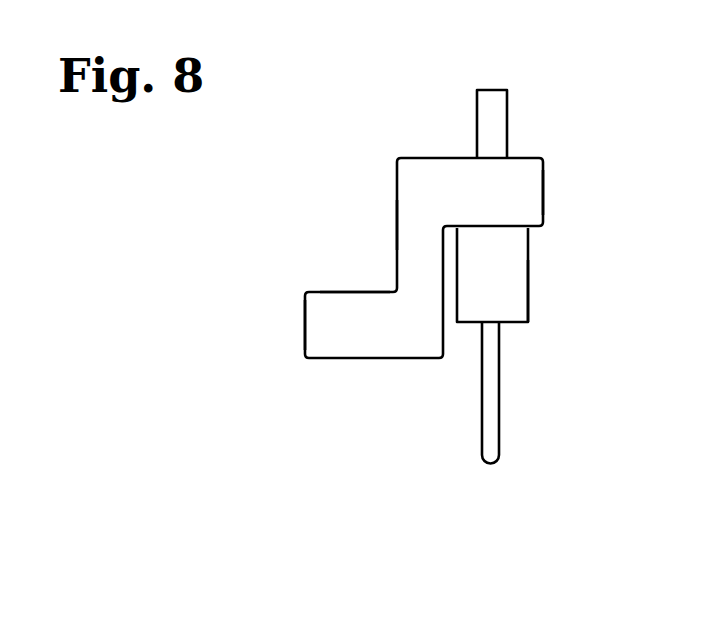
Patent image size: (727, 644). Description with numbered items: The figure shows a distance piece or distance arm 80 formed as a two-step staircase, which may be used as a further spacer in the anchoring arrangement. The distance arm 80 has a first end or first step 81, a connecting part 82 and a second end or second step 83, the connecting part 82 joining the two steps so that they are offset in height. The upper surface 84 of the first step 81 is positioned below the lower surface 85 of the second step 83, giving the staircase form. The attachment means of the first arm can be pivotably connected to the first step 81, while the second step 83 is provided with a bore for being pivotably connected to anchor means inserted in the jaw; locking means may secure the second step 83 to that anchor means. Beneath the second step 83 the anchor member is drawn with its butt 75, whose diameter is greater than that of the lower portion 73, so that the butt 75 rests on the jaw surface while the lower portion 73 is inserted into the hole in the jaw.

The distance arm 80 is at (438, 117).
The first step 81 is at (353, 330).
The connecting part 82 is at (420, 245).
The second step 83 is at (515, 192).
The upper surface 84 is at (318, 288).
The lower surface 85 is at (510, 230).
The butt 75 is at (528, 300).
The lower portion 73 is at (500, 442).